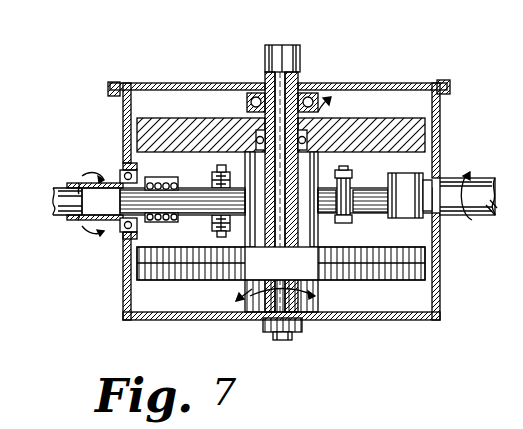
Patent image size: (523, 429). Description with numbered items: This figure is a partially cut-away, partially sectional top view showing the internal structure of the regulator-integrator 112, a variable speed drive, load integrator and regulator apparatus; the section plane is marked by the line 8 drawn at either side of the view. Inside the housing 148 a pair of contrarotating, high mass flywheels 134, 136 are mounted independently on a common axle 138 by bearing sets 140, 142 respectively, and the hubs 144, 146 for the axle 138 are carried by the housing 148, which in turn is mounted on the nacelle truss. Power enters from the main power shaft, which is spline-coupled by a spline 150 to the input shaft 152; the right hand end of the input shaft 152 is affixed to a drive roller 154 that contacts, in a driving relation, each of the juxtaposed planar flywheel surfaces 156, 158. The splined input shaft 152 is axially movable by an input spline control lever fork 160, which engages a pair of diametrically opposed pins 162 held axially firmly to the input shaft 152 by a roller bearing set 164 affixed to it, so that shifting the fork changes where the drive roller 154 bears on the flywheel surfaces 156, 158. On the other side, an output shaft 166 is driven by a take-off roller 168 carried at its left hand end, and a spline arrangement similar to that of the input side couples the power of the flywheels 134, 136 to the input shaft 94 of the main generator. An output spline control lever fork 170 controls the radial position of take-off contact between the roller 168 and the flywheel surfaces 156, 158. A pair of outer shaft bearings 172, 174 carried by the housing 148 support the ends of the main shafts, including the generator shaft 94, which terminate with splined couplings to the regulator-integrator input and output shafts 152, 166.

The section line 8- 8 is at (66, 200).
The input shaft of the main generator 94 is at (449, 178).
The regulator-integrator 112 is at (399, 66).
The flywheel 134 is at (352, 118).
The flywheel 136 is at (352, 280).
The common axle 138 is at (294, 167).
The bearing set 140 is at (261, 96).
The bearing set 142 is at (303, 314).
The hub 144 is at (300, 53).
The hub 146 is at (270, 337).
The housing 148 is at (398, 320).
The spline 150 is at (150, 228).
The input shaft 152 is at (138, 226).
The drive roller 154 is at (242, 248).
The flywheel surface 156 is at (188, 172).
The flywheel surface 158 is at (124, 279).
The input spline control lever fork 160 is at (216, 183).
The pin 162 is at (224, 170).
The roller bearing set 164 is at (207, 232).
The output shaft 166 is at (350, 217).
The take-off roller 168 is at (320, 248).
The output spline control lever fork 170 is at (350, 184).
The outer shaft bearing 172 is at (120, 229).
The outer shaft bearing 174 is at (428, 226).